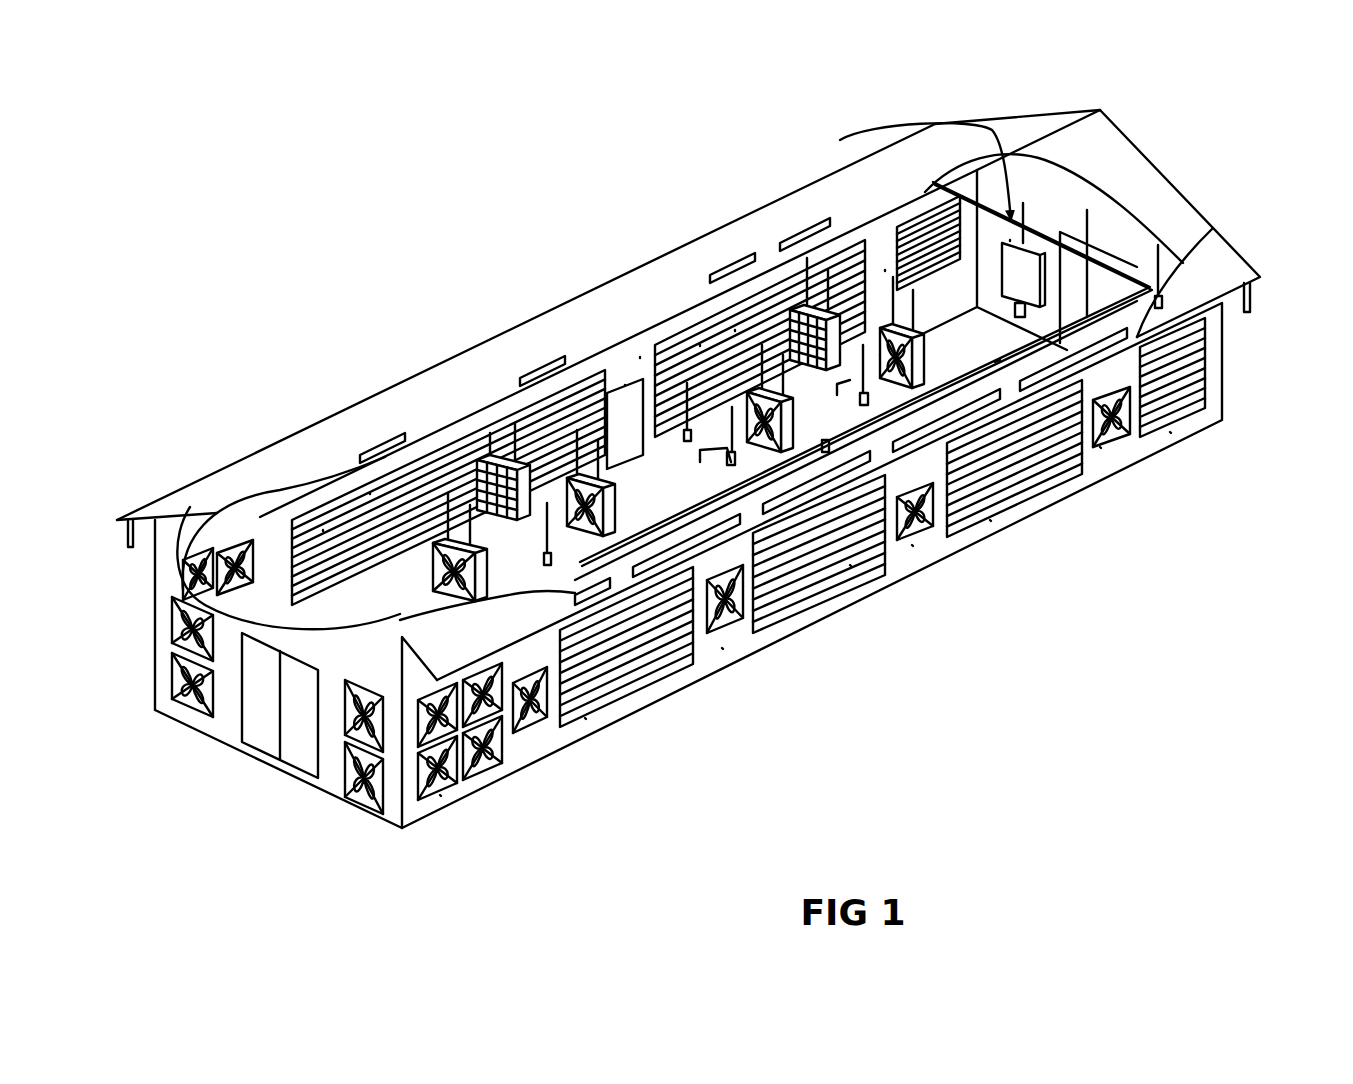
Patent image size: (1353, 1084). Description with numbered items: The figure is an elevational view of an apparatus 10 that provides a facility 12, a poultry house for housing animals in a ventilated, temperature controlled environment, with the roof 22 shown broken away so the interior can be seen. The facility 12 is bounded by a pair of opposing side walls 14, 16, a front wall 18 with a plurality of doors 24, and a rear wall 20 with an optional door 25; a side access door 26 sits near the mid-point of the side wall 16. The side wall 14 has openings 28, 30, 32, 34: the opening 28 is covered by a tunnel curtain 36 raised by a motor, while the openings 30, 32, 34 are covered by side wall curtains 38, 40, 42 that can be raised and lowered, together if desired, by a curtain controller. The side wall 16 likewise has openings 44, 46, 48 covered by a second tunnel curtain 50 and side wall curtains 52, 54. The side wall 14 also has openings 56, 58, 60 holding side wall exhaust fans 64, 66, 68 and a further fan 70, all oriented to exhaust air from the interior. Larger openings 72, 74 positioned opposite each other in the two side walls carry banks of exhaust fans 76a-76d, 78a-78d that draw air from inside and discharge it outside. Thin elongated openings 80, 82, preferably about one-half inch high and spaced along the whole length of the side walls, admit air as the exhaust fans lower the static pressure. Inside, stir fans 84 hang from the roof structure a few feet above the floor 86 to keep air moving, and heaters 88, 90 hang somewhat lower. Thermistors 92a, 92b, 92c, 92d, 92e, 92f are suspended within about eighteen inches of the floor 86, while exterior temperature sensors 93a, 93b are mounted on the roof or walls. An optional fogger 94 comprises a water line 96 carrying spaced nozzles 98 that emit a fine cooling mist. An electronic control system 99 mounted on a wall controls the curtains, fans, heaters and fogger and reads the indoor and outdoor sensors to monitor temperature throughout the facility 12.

The apparatus 10 is at (424, 207).
The facility 12 is at (256, 803).
The side wall 14 is at (634, 704).
The side wall 16 is at (665, 345).
The front wall 18 is at (352, 789).
The rear wall 20 is at (975, 240).
The roof 22 is at (400, 628).
The doors 24 is at (258, 746).
The door 25 is at (1090, 287).
The side access door 26 is at (630, 350).
The opening 28 is at (1170, 432).
The opening 30 is at (990, 520).
The opening 32 is at (797, 613).
The opening 34 is at (585, 718).
The tunnel curtain 36 is at (1202, 407).
The side wall curtain 38 is at (1042, 472).
The side wall curtain 40 is at (850, 566).
The side wall curtain 42 is at (660, 658).
The opening 44 is at (885, 270).
The opening 46 is at (700, 340).
The opening 48 is at (370, 493).
The second tunnel curtain 50 is at (930, 240).
The side wall curtain 52 is at (735, 330).
The side wall curtain 54 is at (323, 530).
The opening 56 is at (1100, 447).
The opening 58 is at (912, 545).
The opening 60 is at (722, 648).
The side wall exhaust fan 64 is at (1128, 437).
The side wall exhaust fan 66 is at (930, 538).
The side wall exhaust fan 68 is at (740, 632).
The side wall exhaust fan 70 is at (536, 733).
The opening 72 is at (438, 797).
The opening 74 is at (222, 556).
The exhaust fans 76a-76d is at (487, 790).
The exhaust fans 78a-78d is at (273, 546).
The elongated openings 80 is at (692, 548).
The elongated openings 82 is at (624, 383).
The stir fans 84 is at (445, 538).
The floor 86 is at (530, 567).
The heater 88 is at (812, 300).
The heater 90 is at (485, 455).
The thermistor 92a is at (860, 406).
The thermistor 92b is at (684, 441).
The thermistor 92c is at (548, 570).
The thermistor 92d is at (728, 465).
The thermistor 92e is at (800, 472).
The thermistor 92f is at (1160, 293).
The temperature sensor 93a is at (1254, 300).
The temperature sensor 93b is at (128, 545).
The fogger 94 is at (1057, 220).
The water line 96 is at (997, 363).
The nozzles 98 is at (590, 559).
The electronic control system 99 is at (1010, 240).